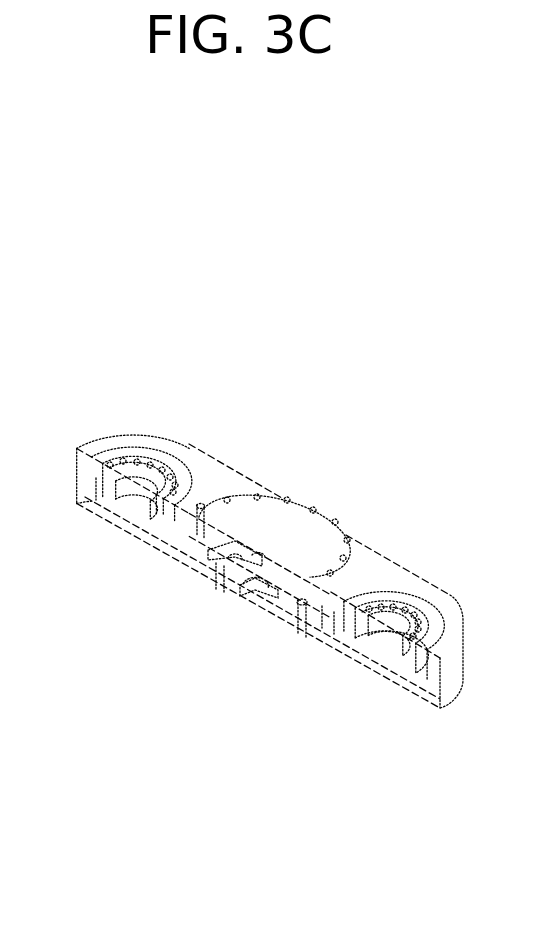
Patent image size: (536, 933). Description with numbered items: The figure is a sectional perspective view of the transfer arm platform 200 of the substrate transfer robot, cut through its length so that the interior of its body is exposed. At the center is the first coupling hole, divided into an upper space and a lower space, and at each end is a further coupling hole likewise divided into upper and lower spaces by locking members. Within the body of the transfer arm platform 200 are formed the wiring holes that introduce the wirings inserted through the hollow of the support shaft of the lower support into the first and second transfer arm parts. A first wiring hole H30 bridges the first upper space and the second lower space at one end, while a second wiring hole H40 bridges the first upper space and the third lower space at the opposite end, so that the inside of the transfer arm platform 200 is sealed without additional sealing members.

The transfer arm platform 200 is at (90, 360).
The second wiring hole H40 is at (197, 547).
The first wiring hole H30 is at (327, 620).